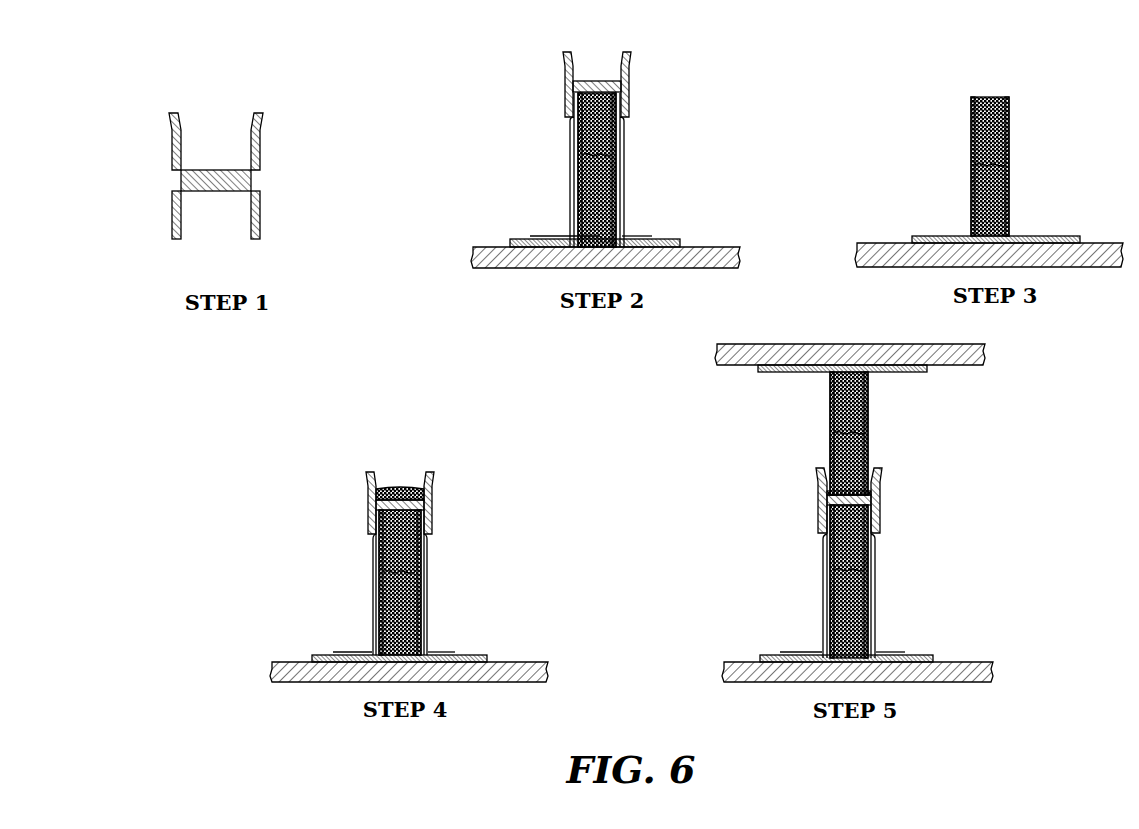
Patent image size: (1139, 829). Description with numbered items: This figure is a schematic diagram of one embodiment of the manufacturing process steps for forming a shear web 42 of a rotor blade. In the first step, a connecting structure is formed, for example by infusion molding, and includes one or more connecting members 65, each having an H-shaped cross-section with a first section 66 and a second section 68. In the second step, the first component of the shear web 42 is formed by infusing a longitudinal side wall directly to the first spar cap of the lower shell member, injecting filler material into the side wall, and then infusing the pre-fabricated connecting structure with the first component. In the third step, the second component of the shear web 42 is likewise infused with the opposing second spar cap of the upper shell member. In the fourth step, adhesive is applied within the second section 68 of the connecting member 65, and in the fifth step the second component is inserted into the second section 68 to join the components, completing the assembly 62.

The shear web 42 is at (829, 489).
The spar cap assembly 62 is at (820, 513).
The connecting member 65 is at (178, 181).
The first section 66 is at (219, 198).
The second section 68 is at (219, 147).